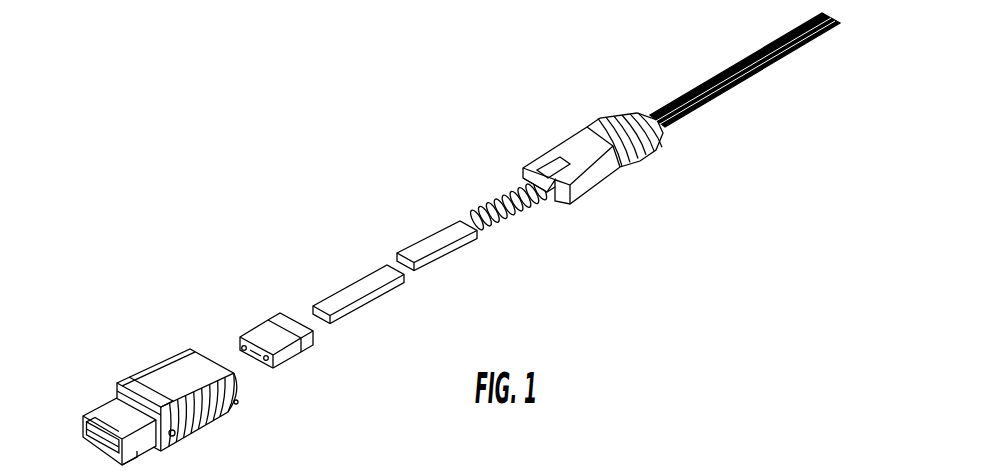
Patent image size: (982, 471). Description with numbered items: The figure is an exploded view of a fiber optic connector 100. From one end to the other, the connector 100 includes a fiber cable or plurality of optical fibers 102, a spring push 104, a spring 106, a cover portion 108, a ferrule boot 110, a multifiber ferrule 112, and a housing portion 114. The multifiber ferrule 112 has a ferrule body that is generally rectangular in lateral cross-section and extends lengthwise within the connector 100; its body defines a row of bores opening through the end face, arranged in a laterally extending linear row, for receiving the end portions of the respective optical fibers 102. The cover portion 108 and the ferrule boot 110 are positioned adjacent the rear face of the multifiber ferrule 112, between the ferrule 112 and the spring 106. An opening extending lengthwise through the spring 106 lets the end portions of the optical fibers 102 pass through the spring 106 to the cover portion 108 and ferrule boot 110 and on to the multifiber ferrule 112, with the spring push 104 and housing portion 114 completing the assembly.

The fiber optic connector 100 is at (250, 123).
The optical fibers 102 is at (673, 70).
The spring push 104 is at (547, 125).
The spring 106 is at (541, 238).
The cover portion 108 is at (417, 214).
The ferrule boot 110 is at (388, 312).
The multifiber ferrule 112 is at (262, 308).
The housing portion 114 is at (120, 362).